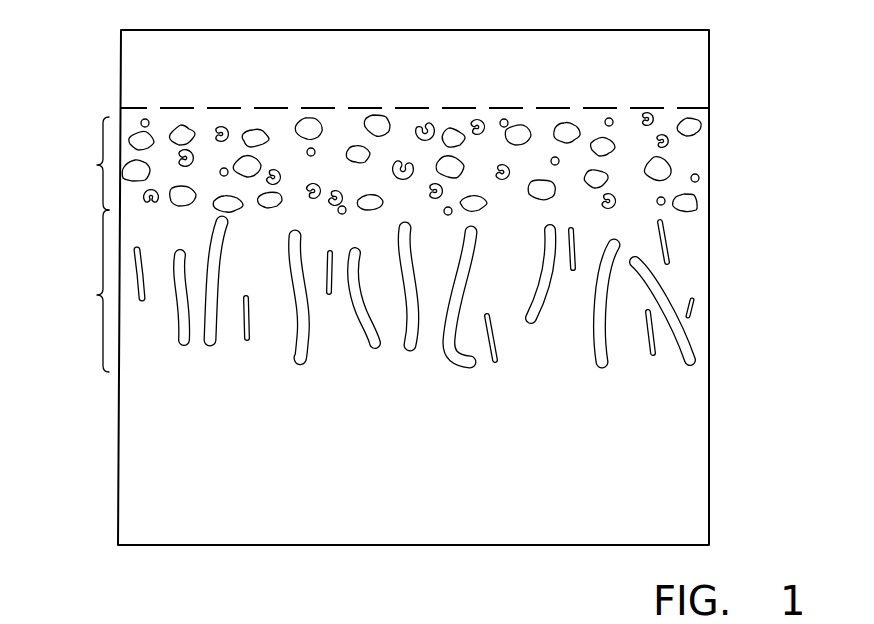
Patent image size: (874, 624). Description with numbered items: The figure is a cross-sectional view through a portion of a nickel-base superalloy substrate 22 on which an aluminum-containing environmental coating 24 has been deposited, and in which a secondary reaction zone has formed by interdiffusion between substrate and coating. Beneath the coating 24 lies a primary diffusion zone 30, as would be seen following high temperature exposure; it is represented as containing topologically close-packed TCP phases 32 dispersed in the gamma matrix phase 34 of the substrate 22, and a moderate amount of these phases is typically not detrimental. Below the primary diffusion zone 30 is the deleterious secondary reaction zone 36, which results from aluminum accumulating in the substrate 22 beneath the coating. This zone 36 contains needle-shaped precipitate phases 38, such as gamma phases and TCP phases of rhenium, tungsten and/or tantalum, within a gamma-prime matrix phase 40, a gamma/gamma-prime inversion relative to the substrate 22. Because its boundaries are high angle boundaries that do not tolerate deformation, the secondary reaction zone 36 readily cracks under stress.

The nickel-base superalloy substrate 22 is at (132, 462).
The environmental coating 24 is at (140, 67).
The primary diffusion zone 30 is at (379, 165).
The topologically close-packed (TCP) phases 32 is at (655, 172).
The gamma matrix phase 34 is at (690, 137).
The secondary reaction zone (SRZ) 36 is at (361, 291).
The needle-shaped precipitate phases 38 is at (607, 365).
The gamma-prime matrix phase 40 is at (692, 272).